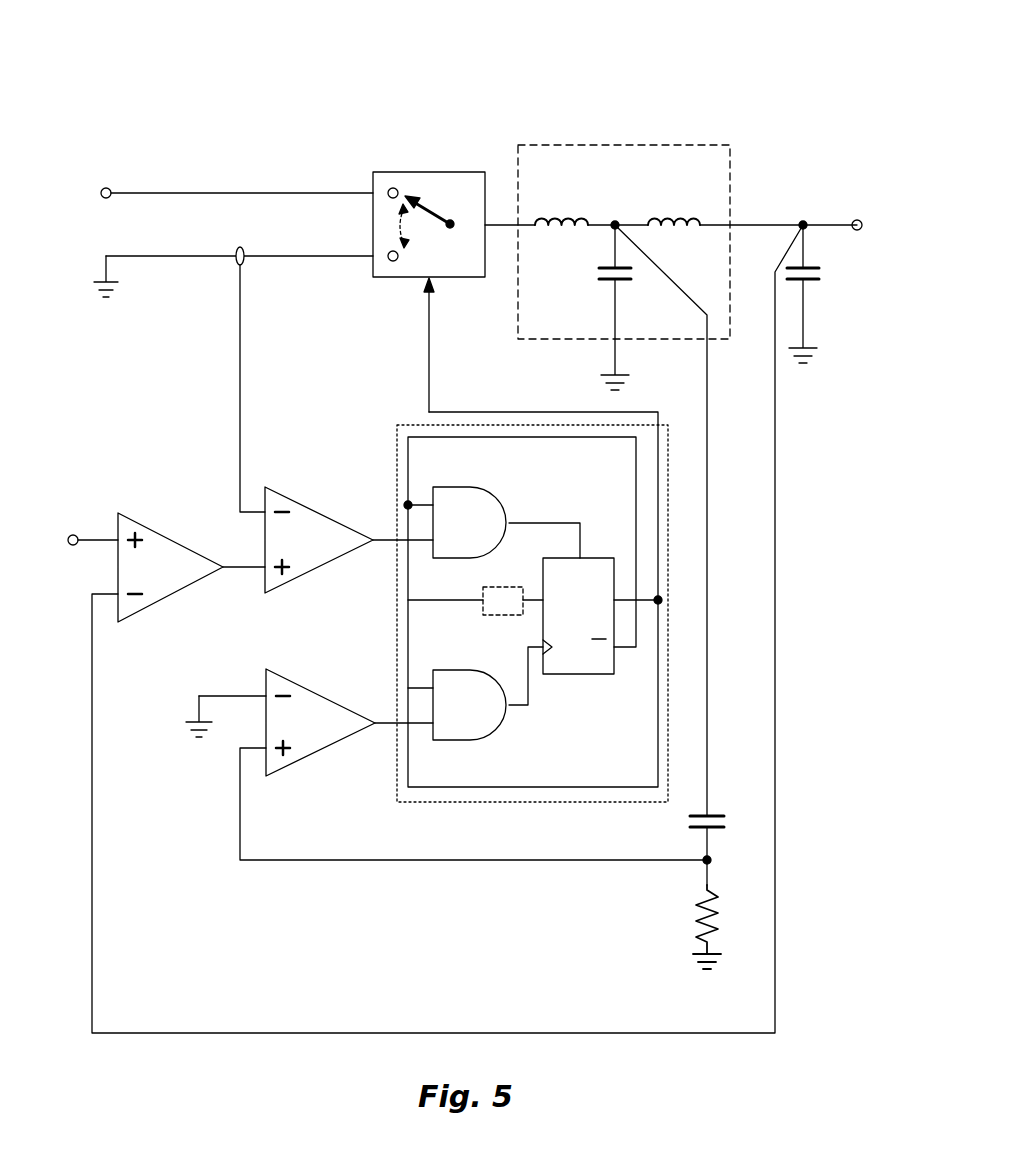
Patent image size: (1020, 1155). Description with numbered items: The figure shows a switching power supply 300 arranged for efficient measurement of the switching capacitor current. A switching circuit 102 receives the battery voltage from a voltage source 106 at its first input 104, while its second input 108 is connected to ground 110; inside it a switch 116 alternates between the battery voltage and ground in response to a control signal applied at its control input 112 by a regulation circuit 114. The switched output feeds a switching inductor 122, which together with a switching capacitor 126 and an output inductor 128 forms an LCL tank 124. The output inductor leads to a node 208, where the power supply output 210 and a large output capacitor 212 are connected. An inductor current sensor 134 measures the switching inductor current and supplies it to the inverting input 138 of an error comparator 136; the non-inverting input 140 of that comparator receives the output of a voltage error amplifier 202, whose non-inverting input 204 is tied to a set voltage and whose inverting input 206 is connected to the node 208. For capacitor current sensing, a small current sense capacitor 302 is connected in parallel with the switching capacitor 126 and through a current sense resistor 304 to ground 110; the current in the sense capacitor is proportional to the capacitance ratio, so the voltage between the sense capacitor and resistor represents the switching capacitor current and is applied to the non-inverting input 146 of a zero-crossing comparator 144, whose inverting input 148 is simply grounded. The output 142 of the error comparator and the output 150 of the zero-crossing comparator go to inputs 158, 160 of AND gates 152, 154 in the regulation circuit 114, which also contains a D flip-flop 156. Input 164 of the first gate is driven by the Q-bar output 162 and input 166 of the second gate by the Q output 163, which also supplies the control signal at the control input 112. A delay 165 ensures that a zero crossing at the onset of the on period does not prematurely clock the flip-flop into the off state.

The switching power supply 300 is at (573, 67).
The switching circuit 102 is at (441, 172).
The first input 104 is at (371, 193).
The voltage source 106 is at (110, 198).
The second input 108 is at (371, 256).
The ground 110 is at (106, 300).
The control input 112 is at (422, 322).
The regulation circuit 114 is at (396, 450).
The switch 116 is at (432, 223).
The switching inductor 122 is at (564, 214).
The LCL tank 124 is at (677, 145).
The switching capacitor 126 is at (599, 286).
The output inductor 128 is at (664, 214).
The inductor current sensor 134 is at (241, 247).
The error comparator 136 is at (349, 540).
The inverting input 138 is at (261, 506).
The non-inverting input 140 is at (232, 572).
The output 142 is at (388, 538).
The zero-crossing comparator 144 is at (349, 722).
The non-inverting input 146 is at (258, 752).
The inverting input 148 is at (249, 694).
The output 150 is at (388, 721).
The AND gate 152 is at (506, 522).
The AND gate 154 is at (469, 705).
The D flip-flop 156 is at (560, 678).
The input 158 is at (422, 545).
The input 160 is at (422, 728).
The Q-bar output 162 is at (626, 650).
The Q output 163 is at (636, 510).
The input 164 is at (422, 502).
The delay 165 is at (500, 618).
The input 166 is at (418, 683).
The voltage error amplifier 202 is at (191, 567).
The non-inverting input 204 is at (78, 545).
The inverting input 206 is at (100, 596).
The node 208 is at (801, 224).
The output 210 is at (857, 231).
The output capacitor 212 is at (819, 285).
The current sense capacitor 302 is at (720, 817).
The current sense resistor 304 is at (720, 898).